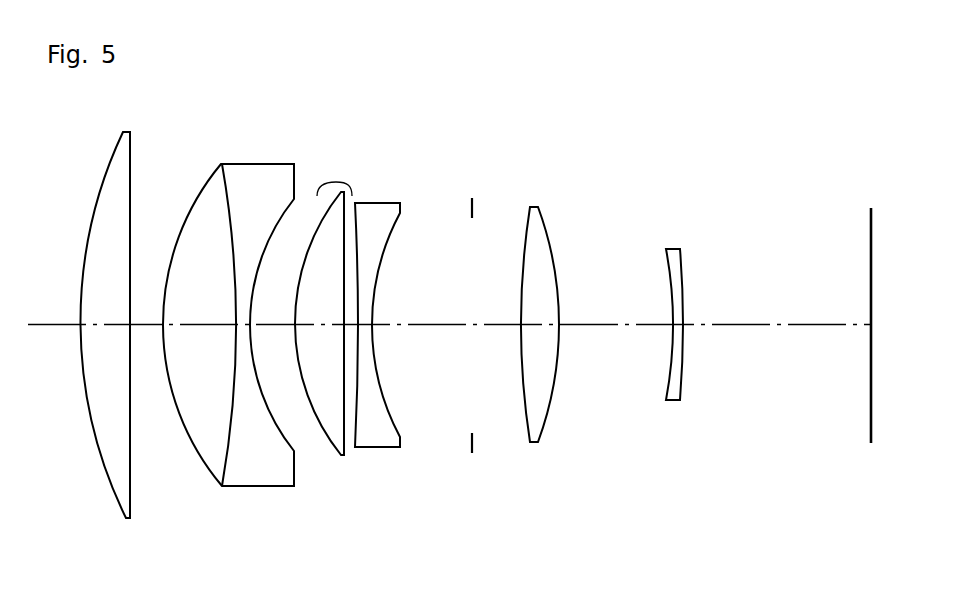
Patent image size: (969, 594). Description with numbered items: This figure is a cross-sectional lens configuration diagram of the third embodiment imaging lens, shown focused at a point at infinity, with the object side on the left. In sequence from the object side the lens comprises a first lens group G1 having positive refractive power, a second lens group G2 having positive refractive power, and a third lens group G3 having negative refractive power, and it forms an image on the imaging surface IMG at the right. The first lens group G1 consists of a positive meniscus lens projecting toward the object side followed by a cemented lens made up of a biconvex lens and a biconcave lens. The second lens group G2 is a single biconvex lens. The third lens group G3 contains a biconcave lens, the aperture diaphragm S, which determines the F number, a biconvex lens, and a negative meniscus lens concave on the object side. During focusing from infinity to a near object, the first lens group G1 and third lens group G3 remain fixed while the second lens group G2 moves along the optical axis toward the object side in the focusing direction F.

The first lens group G1 is at (300, 521).
The second lens group G2 is at (352, 457).
The third lens group G3 is at (697, 457).
The direction of focusing F is at (336, 182).
The aperture diaphragm S is at (470, 198).
The imaging surface IMG is at (868, 412).